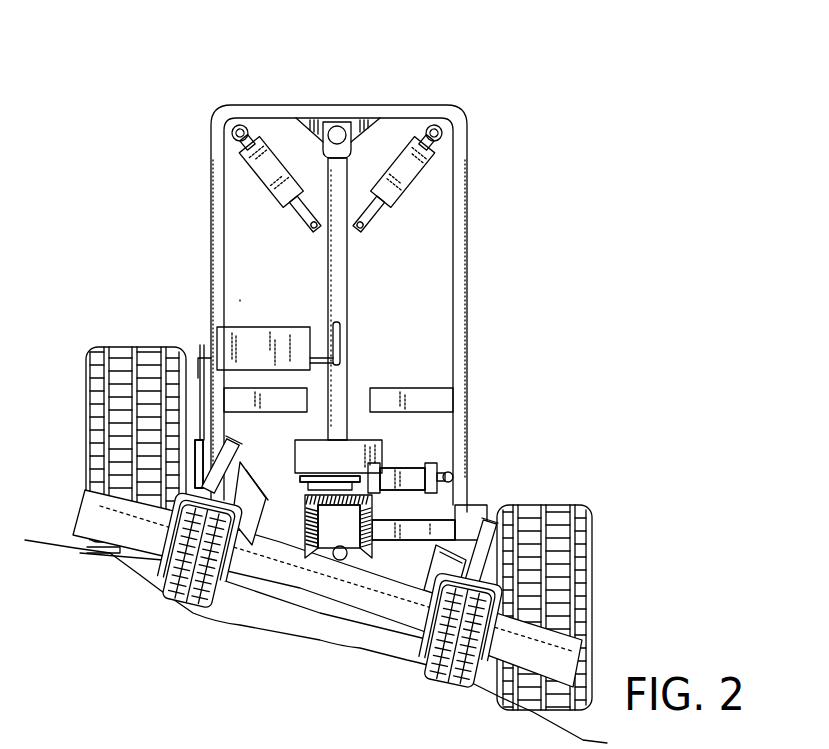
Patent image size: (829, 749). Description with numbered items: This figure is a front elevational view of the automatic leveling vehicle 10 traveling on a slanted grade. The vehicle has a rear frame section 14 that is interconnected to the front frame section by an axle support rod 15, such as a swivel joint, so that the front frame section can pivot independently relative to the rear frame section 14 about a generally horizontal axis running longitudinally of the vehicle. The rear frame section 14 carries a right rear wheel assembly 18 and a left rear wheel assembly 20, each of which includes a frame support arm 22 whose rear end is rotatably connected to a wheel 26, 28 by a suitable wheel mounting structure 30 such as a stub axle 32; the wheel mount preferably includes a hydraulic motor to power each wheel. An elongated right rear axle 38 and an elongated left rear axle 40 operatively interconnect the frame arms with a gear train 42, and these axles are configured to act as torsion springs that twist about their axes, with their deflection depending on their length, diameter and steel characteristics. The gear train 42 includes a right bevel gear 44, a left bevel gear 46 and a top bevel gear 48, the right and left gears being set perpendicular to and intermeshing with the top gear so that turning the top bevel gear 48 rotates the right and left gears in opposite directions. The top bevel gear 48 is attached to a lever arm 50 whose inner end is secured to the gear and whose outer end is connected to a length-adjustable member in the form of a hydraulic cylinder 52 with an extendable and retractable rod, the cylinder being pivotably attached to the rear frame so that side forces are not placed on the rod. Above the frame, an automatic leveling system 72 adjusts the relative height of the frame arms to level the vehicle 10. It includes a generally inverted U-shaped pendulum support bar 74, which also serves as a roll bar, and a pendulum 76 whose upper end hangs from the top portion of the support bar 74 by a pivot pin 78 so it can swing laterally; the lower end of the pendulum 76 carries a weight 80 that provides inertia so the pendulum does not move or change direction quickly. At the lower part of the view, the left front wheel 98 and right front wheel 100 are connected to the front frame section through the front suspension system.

The automatic leveling vehicle 10 is at (184, 121).
The rear frame section 14 is at (380, 600).
The axle support rod 15 is at (343, 527).
The right rear wheel assembly 18 is at (117, 400).
The left rear wheel assembly 20 is at (570, 565).
The frame support arm 22 is at (196, 470).
The wheel 26 is at (105, 391).
The wheel 28 is at (570, 590).
The wheel mounting structure 30 is at (192, 440).
The stub axle 32 is at (199, 464).
The right rear axle 38 is at (327, 588).
The left rear axle 40 is at (428, 540).
The gear train 42 is at (336, 560).
The right bevel gear 44 is at (286, 568).
The left bevel gear 46 is at (430, 512).
The top bevel gear 48 is at (356, 500).
The lever arm 50 is at (312, 492).
The hydraulic cylinder 52 is at (398, 471).
The automatic leveling system 72 is at (297, 86).
The pendulum support bar 74 is at (428, 112).
The pendulum 76 is at (348, 264).
The pivot pin 78 is at (344, 121).
The weight 80 is at (345, 471).
The left front wheel 98 is at (163, 602).
The right front wheel 100 is at (476, 688).